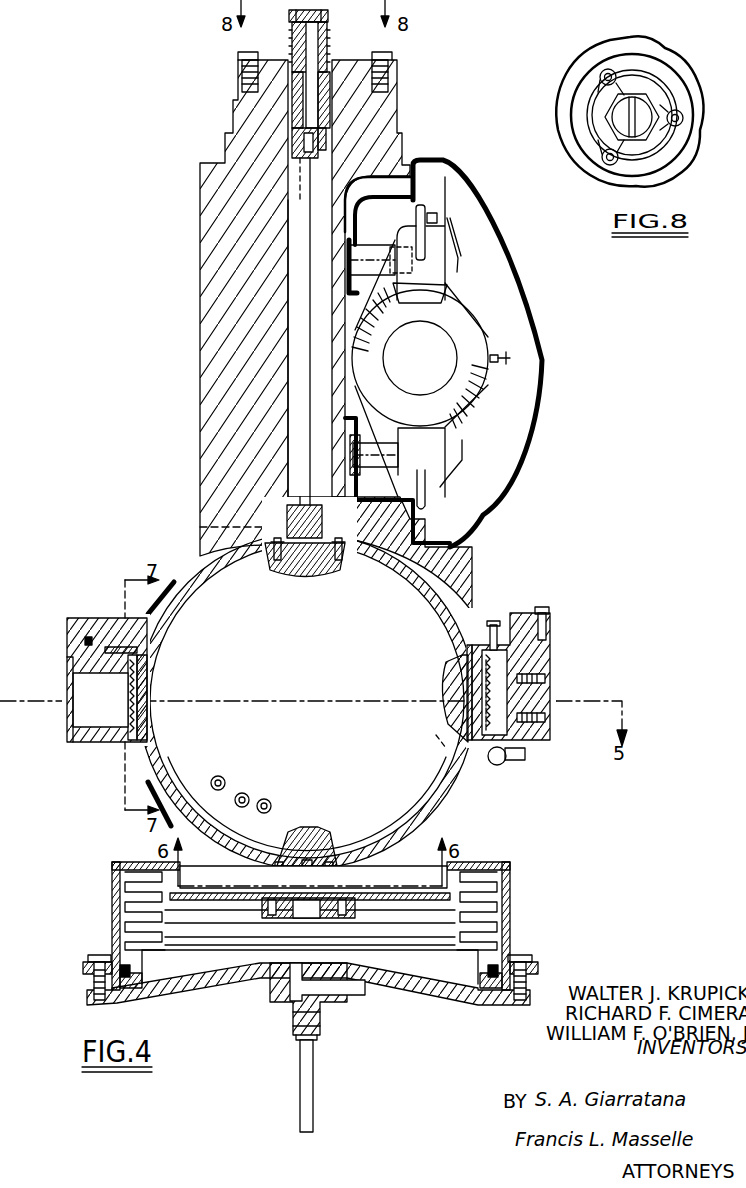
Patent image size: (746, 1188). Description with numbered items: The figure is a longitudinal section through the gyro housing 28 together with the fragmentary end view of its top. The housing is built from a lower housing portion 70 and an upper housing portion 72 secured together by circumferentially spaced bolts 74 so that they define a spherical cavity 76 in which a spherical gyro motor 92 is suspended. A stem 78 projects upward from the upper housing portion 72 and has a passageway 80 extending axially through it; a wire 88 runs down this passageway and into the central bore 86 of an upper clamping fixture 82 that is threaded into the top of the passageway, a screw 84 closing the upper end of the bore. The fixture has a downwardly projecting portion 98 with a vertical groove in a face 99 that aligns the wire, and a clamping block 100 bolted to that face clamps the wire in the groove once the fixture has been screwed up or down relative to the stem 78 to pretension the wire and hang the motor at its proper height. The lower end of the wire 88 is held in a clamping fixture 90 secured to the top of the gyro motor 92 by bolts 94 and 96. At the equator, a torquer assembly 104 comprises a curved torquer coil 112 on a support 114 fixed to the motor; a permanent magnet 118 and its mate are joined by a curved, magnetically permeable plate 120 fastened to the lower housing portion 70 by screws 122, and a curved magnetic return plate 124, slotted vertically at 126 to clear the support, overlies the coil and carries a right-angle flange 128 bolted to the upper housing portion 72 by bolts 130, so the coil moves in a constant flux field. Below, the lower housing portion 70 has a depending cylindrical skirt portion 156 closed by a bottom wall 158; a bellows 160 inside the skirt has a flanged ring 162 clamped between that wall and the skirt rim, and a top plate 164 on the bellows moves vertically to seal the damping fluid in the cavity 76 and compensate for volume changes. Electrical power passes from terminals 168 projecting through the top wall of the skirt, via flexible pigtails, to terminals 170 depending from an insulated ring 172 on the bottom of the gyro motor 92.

In FIG. 4, the gyro housing 28 is at (197, 267).
In FIG. 4, the lower housing portion 70 is at (138, 770).
In FIG. 4, the upper housing portion 72 is at (196, 551).
In FIG. 4, the bolts 74 is at (546, 612).
In FIG. 4, the spherical cavity 76 is at (240, 563).
In FIG. 4, the stem 78 is at (200, 232).
In FIG. 4, the passageway 80 is at (288, 310).
In FIG. 4, the clamping fixture 82 is at (292, 52).
In FIG. 4, the screw 84 is at (322, 10).
In FIG. 8, the screw 84 is at (622, 112).
In FIG. 4, the central bore 86 is at (327, 88).
In FIG. 4, the wire 88 is at (292, 385).
In FIG. 4, the clamping fixture 90 is at (290, 522).
In FIG. 4, the spherical gyro motor 92 is at (372, 678).
In FIG. 4, the bolt 94 is at (341, 566).
In FIG. 4, the bolt 96 is at (268, 566).
In FIG. 4, the downwardly projecting portion 98 is at (292, 132).
In FIG. 4, the face 99 is at (302, 143).
In FIG. 4, the clamping block 100 is at (323, 148).
In FIG. 4, the torquer assembly 104 is at (88, 668).
In FIG. 4, the torquer coil 112 is at (468, 660).
In FIG. 4, the support 114 is at (448, 688).
In FIG. 4, the permanent magnet 118 is at (76, 708).
In FIG. 4, the magnetically permeable plate 120 is at (67, 743).
In FIG. 4, the screws 122 is at (526, 698).
In FIG. 4, the magnetic return plate 124 is at (145, 686).
In FIG. 4, the slot 126 is at (486, 674).
In FIG. 4, the right-angle flange 128 is at (118, 645).
In FIG. 4, the bolts 130 is at (492, 624).
In FIG. 4, the cylindrical skirt portion 156 is at (508, 950).
In FIG. 4, the bottom wall 158 is at (480, 996).
In FIG. 4, the bellows 160 is at (455, 915).
In FIG. 4, the flanged ring 162 is at (494, 980).
In FIG. 4, the top plate 164 is at (200, 902).
In FIG. 4, the terminals 168 is at (430, 812).
In FIG. 4, the terminals 170 is at (300, 832).
In FIG. 4, the insulated ring 172 is at (326, 842).